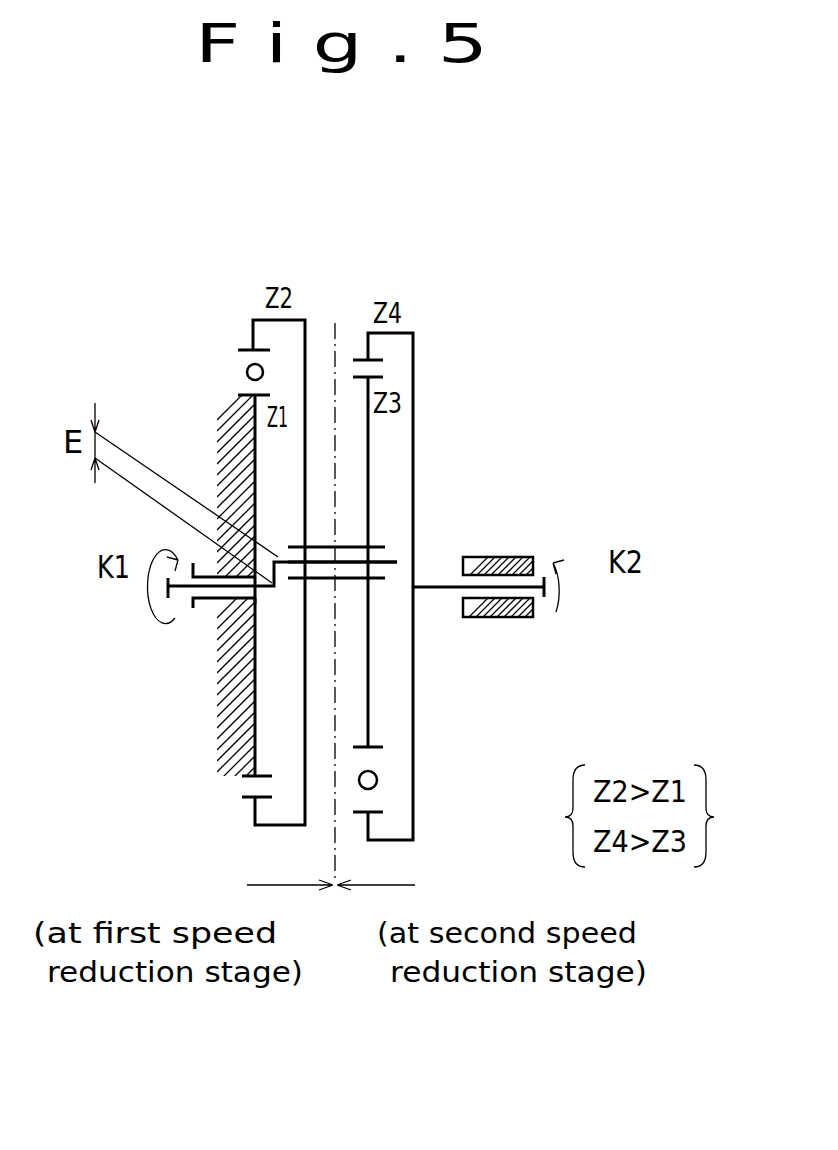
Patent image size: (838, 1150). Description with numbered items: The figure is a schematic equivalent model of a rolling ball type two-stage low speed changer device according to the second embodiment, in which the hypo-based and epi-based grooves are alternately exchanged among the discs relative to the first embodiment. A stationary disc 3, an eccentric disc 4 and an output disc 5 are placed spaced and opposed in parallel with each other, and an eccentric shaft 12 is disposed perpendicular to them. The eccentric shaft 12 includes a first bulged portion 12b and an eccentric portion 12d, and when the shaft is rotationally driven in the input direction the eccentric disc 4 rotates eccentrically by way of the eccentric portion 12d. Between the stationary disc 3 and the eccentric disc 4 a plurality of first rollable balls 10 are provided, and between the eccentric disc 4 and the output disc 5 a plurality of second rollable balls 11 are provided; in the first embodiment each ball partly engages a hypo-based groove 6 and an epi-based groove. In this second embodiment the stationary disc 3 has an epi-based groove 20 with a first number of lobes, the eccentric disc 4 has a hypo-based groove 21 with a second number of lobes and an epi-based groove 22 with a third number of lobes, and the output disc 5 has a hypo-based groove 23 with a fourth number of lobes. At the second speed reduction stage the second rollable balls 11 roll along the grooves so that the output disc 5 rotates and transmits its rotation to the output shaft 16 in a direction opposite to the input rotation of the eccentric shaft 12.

The stationary disc 3 is at (257, 448).
The eccentric disc 4 is at (306, 373).
The output disc 5 is at (364, 457).
The hypo-based groove 6 is at (415, 487).
The first rollable balls 10 is at (246, 372).
The second rollable balls 11 is at (378, 780).
The eccentric shaft 12 is at (185, 606).
The first bulged portion 12b is at (217, 603).
The eccentric portion 12d is at (347, 563).
The output shaft 16 is at (507, 575).
The epi-based groove 20 is at (242, 395).
The hypo-based groove 21 is at (243, 353).
The epi-based groove 22 is at (375, 372).
The hypo-based groove 23 is at (383, 362).